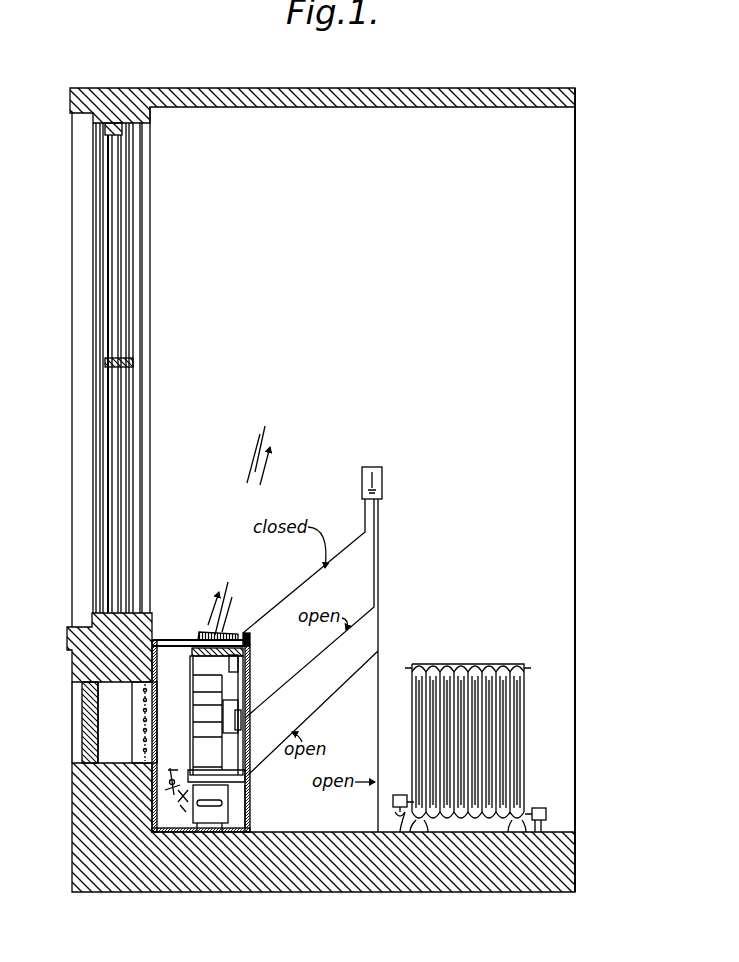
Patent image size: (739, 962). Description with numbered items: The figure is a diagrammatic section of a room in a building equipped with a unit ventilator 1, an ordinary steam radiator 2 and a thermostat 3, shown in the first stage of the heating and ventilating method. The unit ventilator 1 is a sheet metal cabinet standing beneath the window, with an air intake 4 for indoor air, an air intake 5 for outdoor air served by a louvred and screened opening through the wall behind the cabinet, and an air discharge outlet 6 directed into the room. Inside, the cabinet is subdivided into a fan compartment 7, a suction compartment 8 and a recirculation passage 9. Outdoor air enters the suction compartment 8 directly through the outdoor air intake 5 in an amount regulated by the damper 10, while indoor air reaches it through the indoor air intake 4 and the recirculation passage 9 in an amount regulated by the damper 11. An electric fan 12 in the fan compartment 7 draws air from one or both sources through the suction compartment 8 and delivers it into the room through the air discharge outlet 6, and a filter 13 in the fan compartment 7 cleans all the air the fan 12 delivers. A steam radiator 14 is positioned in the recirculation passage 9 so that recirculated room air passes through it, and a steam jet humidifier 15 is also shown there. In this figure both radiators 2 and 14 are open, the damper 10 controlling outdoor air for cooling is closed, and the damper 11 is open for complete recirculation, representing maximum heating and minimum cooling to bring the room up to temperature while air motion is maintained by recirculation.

The unit ventilator 1 is at (245, 695).
The steam radiator 2 is at (478, 662).
The thermostat 3 is at (383, 486).
The air intake for indoor air 4 is at (250, 808).
The air intake for outdoor air 5 is at (82, 710).
The air discharge outlet 6 is at (204, 632).
The fan compartment 7 is at (245, 672).
The suction compartment 8 is at (166, 682).
The recirculation passage 9 is at (183, 806).
The damper 10 is at (145, 715).
The damper 11 is at (172, 773).
The electric fan 12 is at (210, 738).
The filter 13 is at (240, 663).
The steam radiator 14 is at (216, 812).
The steam jet humidifier 15 is at (183, 800).